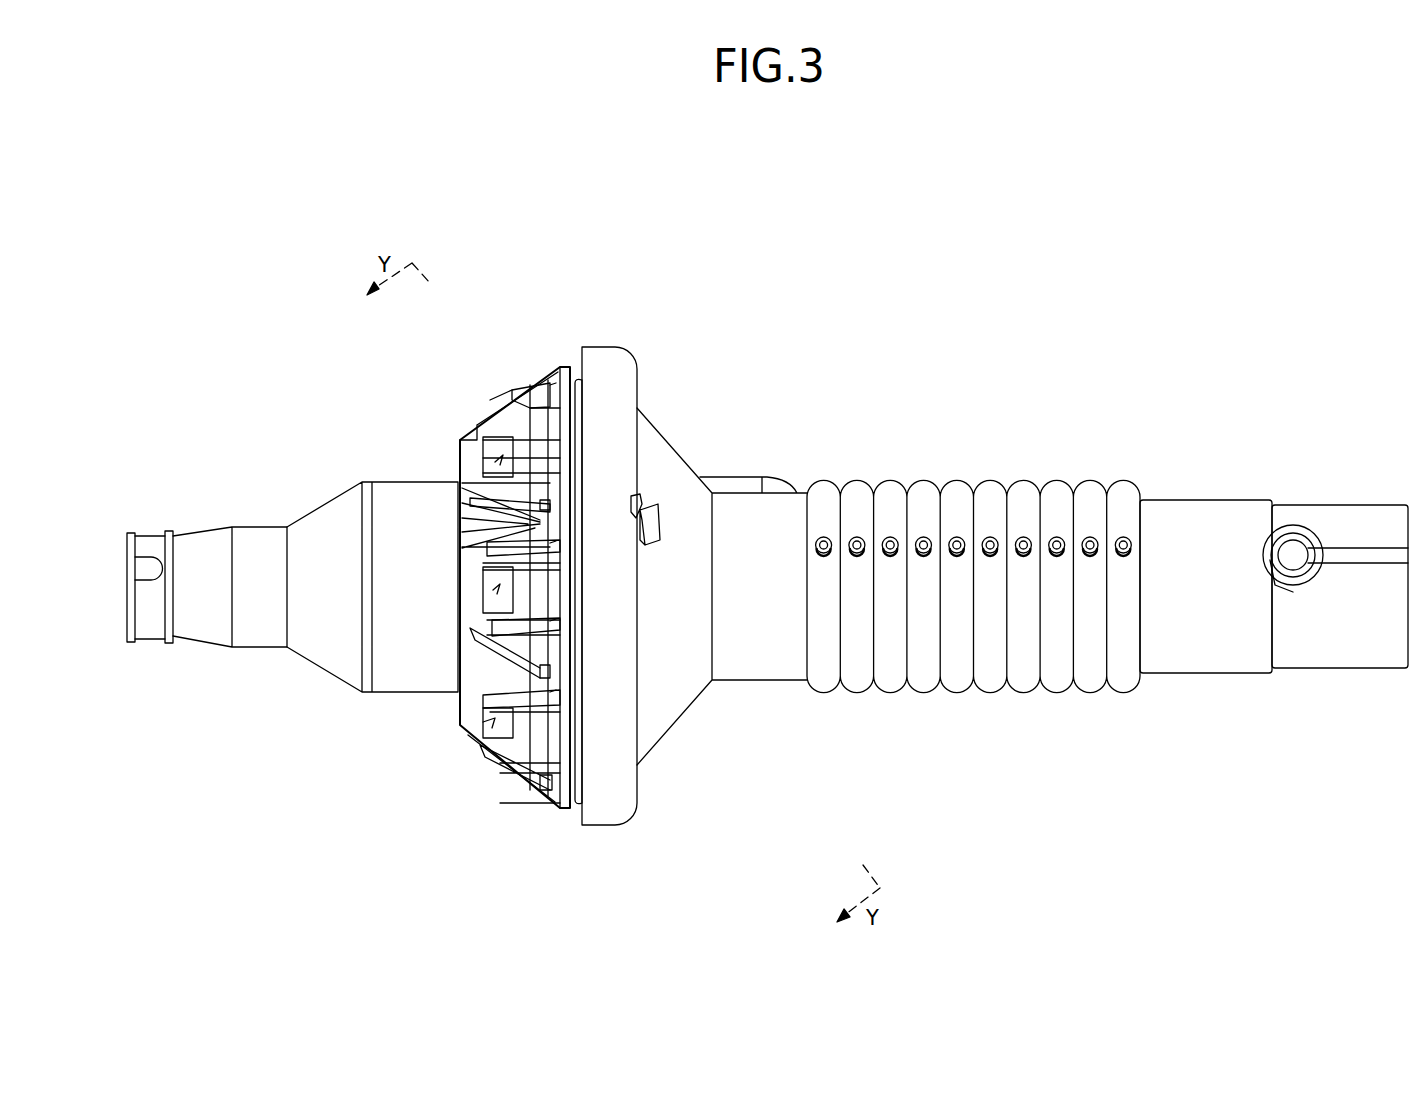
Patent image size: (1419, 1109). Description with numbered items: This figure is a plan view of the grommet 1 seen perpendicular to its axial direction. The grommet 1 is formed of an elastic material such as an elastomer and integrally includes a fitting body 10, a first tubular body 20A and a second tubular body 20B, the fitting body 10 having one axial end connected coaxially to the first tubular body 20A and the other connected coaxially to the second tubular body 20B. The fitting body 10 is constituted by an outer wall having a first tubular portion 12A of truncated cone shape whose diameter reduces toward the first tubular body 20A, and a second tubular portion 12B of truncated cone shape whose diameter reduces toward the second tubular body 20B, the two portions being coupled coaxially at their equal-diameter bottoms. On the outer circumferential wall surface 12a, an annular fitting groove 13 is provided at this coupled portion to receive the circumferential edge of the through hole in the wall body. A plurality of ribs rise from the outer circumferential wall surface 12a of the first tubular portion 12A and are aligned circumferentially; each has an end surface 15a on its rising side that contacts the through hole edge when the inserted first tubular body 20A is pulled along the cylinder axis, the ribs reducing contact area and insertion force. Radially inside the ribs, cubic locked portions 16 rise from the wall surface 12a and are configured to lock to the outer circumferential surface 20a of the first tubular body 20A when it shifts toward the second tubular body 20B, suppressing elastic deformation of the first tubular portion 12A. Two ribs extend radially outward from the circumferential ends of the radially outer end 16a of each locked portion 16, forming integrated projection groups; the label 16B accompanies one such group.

The grommet 1 is at (750, 163).
The fitting body 10 is at (477, 211).
The first tubular portion 12A is at (550, 351).
The second tubular portion 12B is at (697, 459).
The outer circumferential wall surface 12a is at (545, 805).
The fitting groove 13 is at (584, 349).
The end surface 15a is at (810, 752).
The locked portion 16 is at (472, 438).
The radially outer end 16a is at (462, 453).
The bellows fin holder 16B is at (973, 636).
The first tubular body 20A is at (281, 497).
The second tubular body 20B is at (989, 456).
The outer circumferential surface 20a is at (403, 482).